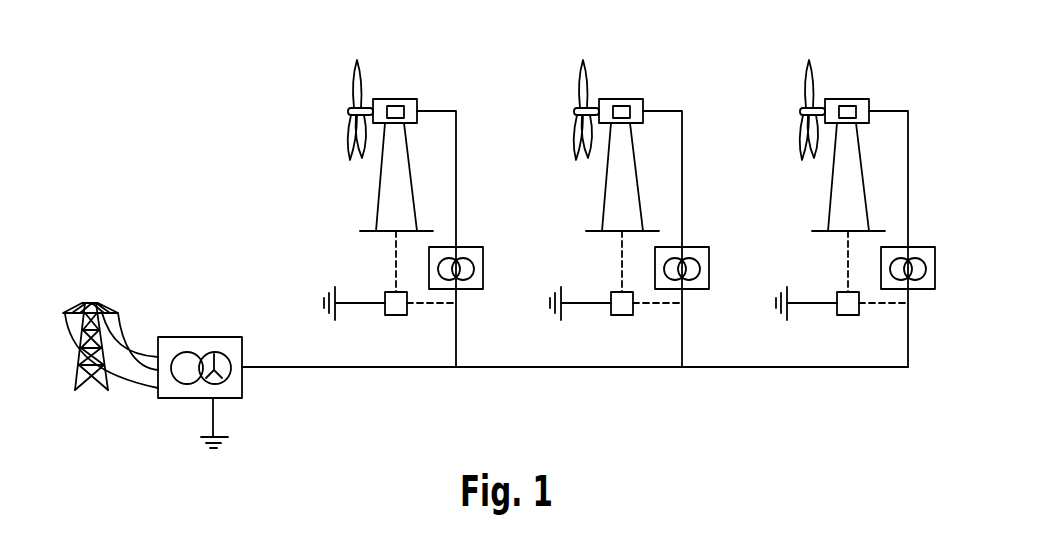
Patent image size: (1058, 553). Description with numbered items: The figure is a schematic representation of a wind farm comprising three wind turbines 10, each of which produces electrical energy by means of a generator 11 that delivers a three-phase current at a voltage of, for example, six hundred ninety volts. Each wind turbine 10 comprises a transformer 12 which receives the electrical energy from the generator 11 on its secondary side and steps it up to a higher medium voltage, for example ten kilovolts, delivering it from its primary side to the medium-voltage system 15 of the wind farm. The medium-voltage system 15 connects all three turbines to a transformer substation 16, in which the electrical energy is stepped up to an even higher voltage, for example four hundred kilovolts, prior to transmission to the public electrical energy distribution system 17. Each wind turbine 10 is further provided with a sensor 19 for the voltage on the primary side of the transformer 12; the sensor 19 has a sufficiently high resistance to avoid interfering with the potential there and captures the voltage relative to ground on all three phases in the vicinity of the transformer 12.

The wind turbine 10 is at (395, 192).
The generator 11 is at (399, 108).
The transformer 12 is at (485, 266).
The medium-voltage system 15 is at (537, 368).
The transformer substation 16 is at (193, 337).
The public electrical energy distribution system 17 is at (92, 305).
The sensor 19 is at (397, 310).